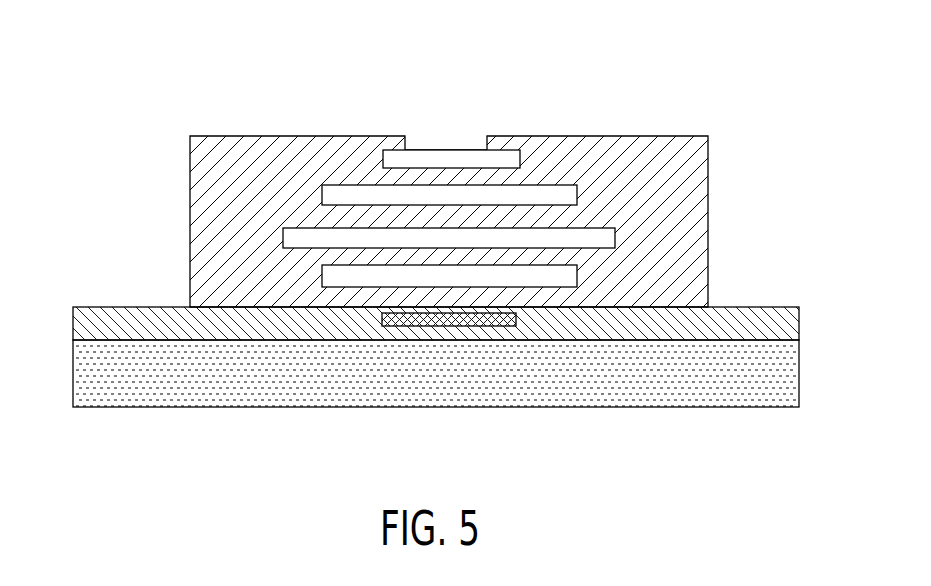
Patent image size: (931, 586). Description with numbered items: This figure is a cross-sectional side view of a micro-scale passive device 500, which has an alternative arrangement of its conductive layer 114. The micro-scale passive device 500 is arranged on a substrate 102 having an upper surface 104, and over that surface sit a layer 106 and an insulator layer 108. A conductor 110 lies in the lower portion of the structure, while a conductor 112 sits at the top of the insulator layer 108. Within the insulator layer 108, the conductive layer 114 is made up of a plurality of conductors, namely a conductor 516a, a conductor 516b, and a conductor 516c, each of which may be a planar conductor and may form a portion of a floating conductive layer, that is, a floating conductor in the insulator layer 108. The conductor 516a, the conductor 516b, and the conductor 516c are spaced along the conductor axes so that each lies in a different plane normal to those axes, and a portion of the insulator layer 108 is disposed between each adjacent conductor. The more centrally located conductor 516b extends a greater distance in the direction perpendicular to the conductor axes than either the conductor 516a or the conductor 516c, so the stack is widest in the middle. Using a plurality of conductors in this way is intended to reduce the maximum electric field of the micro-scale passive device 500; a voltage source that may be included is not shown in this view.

The micro-scale passive device 500 is at (178, 97).
The substrate 102 is at (87, 366).
The upper surface 104 is at (138, 337).
The layer 106 is at (782, 326).
The insulator layer 108 is at (695, 157).
The conductor 110 is at (458, 320).
The conductor 112 is at (458, 157).
The conductive layer 114 is at (716, 168).
The conductor 516a is at (330, 281).
The conductor 516b is at (297, 238).
The conductor 516c is at (330, 193).